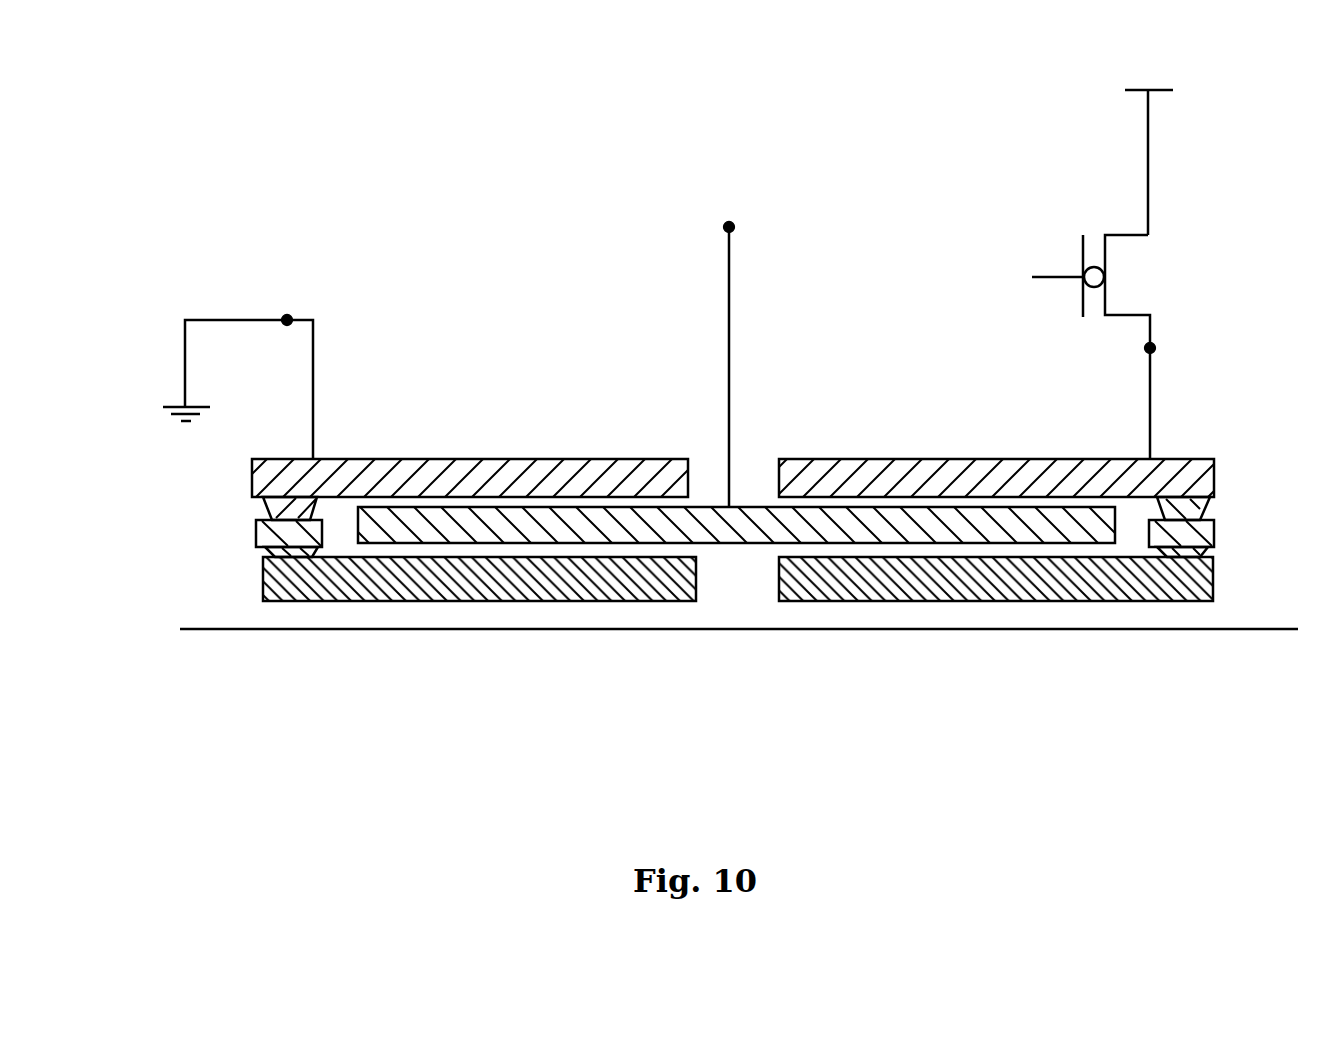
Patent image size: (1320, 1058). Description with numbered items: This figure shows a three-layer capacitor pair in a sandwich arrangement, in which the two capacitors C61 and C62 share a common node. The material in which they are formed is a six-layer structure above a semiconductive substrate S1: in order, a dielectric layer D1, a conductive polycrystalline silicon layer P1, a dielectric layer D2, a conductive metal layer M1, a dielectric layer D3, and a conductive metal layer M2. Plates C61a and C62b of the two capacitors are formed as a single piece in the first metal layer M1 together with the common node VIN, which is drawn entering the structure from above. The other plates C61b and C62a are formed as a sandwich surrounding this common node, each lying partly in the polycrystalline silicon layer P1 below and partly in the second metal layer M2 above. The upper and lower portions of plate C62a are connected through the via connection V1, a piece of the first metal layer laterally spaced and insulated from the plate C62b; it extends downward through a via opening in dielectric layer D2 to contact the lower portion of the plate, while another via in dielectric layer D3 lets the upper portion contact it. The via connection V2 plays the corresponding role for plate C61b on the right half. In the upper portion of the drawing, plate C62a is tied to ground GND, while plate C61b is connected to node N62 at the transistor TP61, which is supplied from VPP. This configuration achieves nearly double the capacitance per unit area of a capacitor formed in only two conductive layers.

The capacitor C62 is at (475, 446).
The capacitor plate C62a is at (632, 465).
The capacitor plate C62b is at (398, 518).
The capacitor C61 is at (987, 456).
The capacitor plate C61a is at (868, 512).
The capacitor plate C61b is at (1043, 465).
The conductive metal layer M2 is at (527, 490).
The conductive metal layer M1 is at (635, 535).
The conductive polycrystalline silicon layer P1 is at (448, 582).
The dielectric layer D1 is at (810, 615).
The dielectric layer D2 is at (875, 548).
The dielectric layer D3 is at (925, 500).
The via connection V1 is at (276, 538).
The via connection V2 is at (1165, 525).
The semiconductive substrate S1 is at (1252, 629).
The ground GND is at (287, 320).
The common node VIN is at (765, 351).
The boosted supply voltage VPP is at (1148, 135).
The transistor TP61 is at (1129, 347).
The node N62 is at (1150, 348).